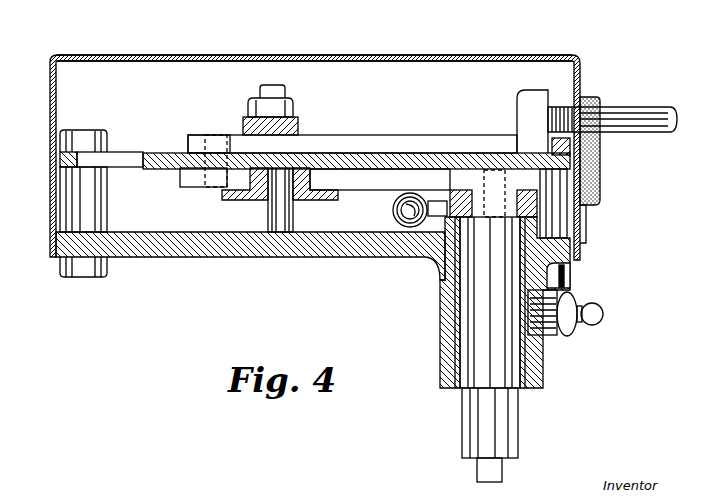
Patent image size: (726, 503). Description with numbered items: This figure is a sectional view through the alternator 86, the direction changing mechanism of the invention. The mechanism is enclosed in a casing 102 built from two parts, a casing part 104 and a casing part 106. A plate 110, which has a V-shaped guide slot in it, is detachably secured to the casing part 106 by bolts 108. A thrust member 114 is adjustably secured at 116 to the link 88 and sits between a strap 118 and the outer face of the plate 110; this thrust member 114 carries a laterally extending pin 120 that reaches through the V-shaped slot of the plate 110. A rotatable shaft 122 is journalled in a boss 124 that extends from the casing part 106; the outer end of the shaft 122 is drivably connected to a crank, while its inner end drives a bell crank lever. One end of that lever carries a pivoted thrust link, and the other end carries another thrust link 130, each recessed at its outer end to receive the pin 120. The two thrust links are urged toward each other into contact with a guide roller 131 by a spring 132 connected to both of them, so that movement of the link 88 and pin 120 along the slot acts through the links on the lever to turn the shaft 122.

The alternator 86 is at (420, 56).
The link 88 is at (630, 110).
The casing 102 is at (152, 57).
The casing part 104 is at (300, 57).
The casing part 106 is at (225, 260).
The bolts 108 is at (70, 226).
The plate 110 is at (425, 153).
The thrust member 114 is at (365, 137).
The adjustable securing point 116 is at (533, 92).
The strap 118 is at (300, 118).
The pin 120 is at (222, 134).
The shaft 122 is at (465, 395).
The boss 124 is at (440, 330).
The thrust link 130 is at (373, 190).
The guide roller 131 is at (258, 200).
The spring 132 is at (408, 225).